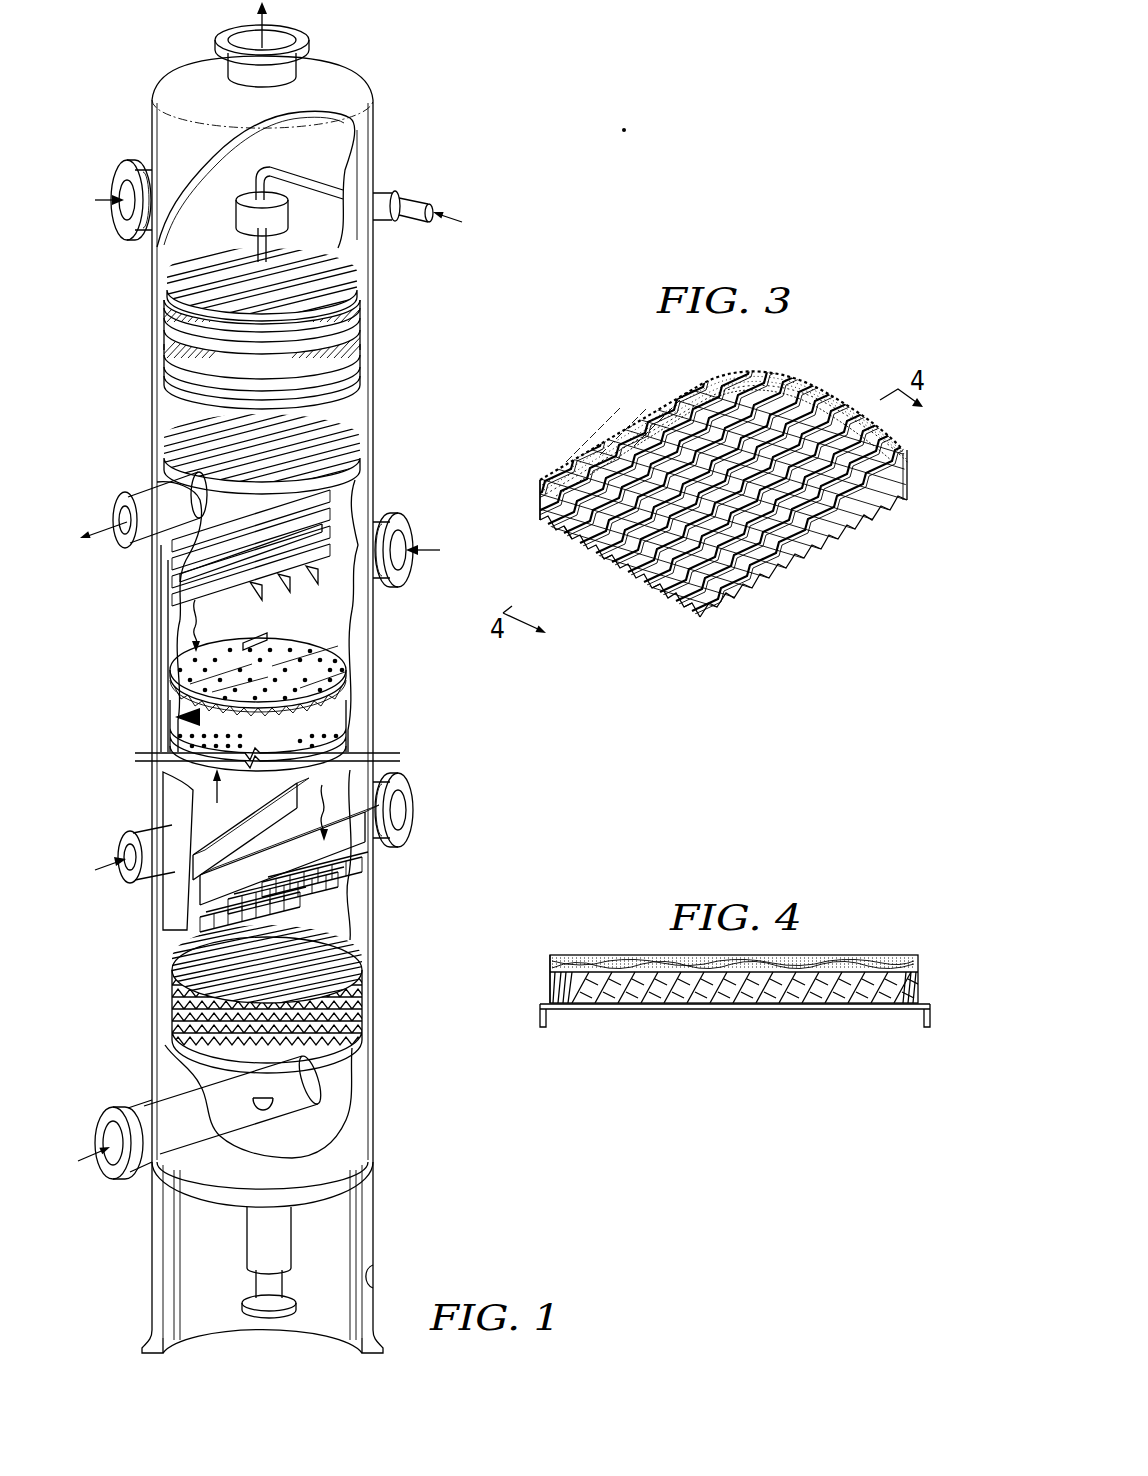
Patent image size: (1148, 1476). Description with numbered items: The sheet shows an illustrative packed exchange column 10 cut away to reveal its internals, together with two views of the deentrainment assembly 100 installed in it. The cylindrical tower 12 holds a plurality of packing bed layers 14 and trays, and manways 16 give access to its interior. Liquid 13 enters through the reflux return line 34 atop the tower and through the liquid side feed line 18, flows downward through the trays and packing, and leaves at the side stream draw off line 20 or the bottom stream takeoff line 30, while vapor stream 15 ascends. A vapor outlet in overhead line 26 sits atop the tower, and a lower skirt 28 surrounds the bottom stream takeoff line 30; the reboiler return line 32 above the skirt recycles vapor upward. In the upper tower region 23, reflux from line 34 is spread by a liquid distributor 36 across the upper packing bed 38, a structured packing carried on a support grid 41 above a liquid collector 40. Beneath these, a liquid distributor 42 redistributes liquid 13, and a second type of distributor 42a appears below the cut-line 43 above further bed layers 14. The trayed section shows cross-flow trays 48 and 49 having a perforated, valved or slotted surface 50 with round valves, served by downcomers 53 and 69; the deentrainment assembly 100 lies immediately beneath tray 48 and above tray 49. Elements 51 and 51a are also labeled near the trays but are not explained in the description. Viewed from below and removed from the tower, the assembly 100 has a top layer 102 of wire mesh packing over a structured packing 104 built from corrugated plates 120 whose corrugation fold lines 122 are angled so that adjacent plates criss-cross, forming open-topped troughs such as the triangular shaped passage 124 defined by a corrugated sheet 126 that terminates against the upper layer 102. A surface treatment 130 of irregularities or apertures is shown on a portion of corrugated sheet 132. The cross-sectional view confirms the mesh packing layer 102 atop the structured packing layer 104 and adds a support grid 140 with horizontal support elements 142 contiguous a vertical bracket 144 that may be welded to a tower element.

In FIG. 1, the exchange column 10 is at (383, 62).
In FIG. 1, the cylindrical tower 12 is at (375, 122).
In FIG. 1, the liquid 13 is at (448, 218).
In FIG. 1, the packing bed layers 14 is at (362, 320).
In FIG. 1, the vapor stream 15 is at (266, 22).
In FIG. 1, the manways 16 is at (113, 172).
In FIG. 1, the liquid side feed line 18 is at (125, 840).
In FIG. 1, the side stream draw off line 20 is at (140, 496).
In FIG. 1, the upper tower region 23 is at (156, 344).
In FIG. 1, the overhead line 26 is at (306, 44).
In FIG. 1, the lower skirt 28 is at (378, 1286).
In FIG. 1, the bottom stream takeoff line 30 is at (277, 1226).
In FIG. 1, the reboiler return line 32 is at (142, 1110).
In FIG. 1, the reflux return line 34 is at (380, 192).
In FIG. 1, the liquid distributor 36 is at (172, 272).
In FIG. 1, the upper packing bed 38 is at (164, 306).
In FIG. 1, the liquid collector 40 is at (355, 440).
In FIG. 1, the support grid 41 is at (360, 380).
In FIG. 1, the liquid distributor 42 is at (170, 578).
In FIG. 1, the second type of distributor 42a is at (362, 888).
In FIG. 1, the cut-line 43 is at (400, 755).
In FIG. 1, the tray 48 is at (280, 690).
In FIG. 1, the tray 49 is at (300, 748).
In FIG. 1, the perforated, valved or slotted surface 50 is at (314, 648).
In FIG. 1, the liquid flow direction 51 is at (150, 712).
In FIG. 1, the downcomer 51a is at (165, 724).
In FIG. 1, the downcomer 53 is at (204, 652).
In FIG. 1, the downcomer 69 is at (345, 748).
In FIG. 1, the deentrainment assembly 100 is at (342, 708).
In FIG. 3, the deentrainment assembly 100 is at (840, 383).
In FIG. 4, the deentrainment assembly 100 is at (577, 950).
In FIG. 3, the mesh packing layer 102 is at (805, 380).
In FIG. 4, the mesh packing layer 102 is at (866, 955).
In FIG. 3, the structured packing 104 is at (540, 498).
In FIG. 4, the structured packing 104 is at (548, 988).
In FIG. 3, the corrugated plates 120 is at (570, 568).
In FIG. 3, the corrugation fold lines 122 is at (612, 603).
In FIG. 3, the triangular shaped passage 124 is at (660, 622).
In FIG. 3, the corrugated sheet 126 is at (678, 620).
In FIG. 3, the surface treatment 130 is at (610, 448).
In FIG. 3, the corrugated sheet 132 is at (648, 428).
In FIG. 4, the support grid 140 is at (923, 1020).
In FIG. 4, the horizontal support elements 142 is at (680, 1010).
In FIG. 4, the bracket 144 is at (546, 1022).